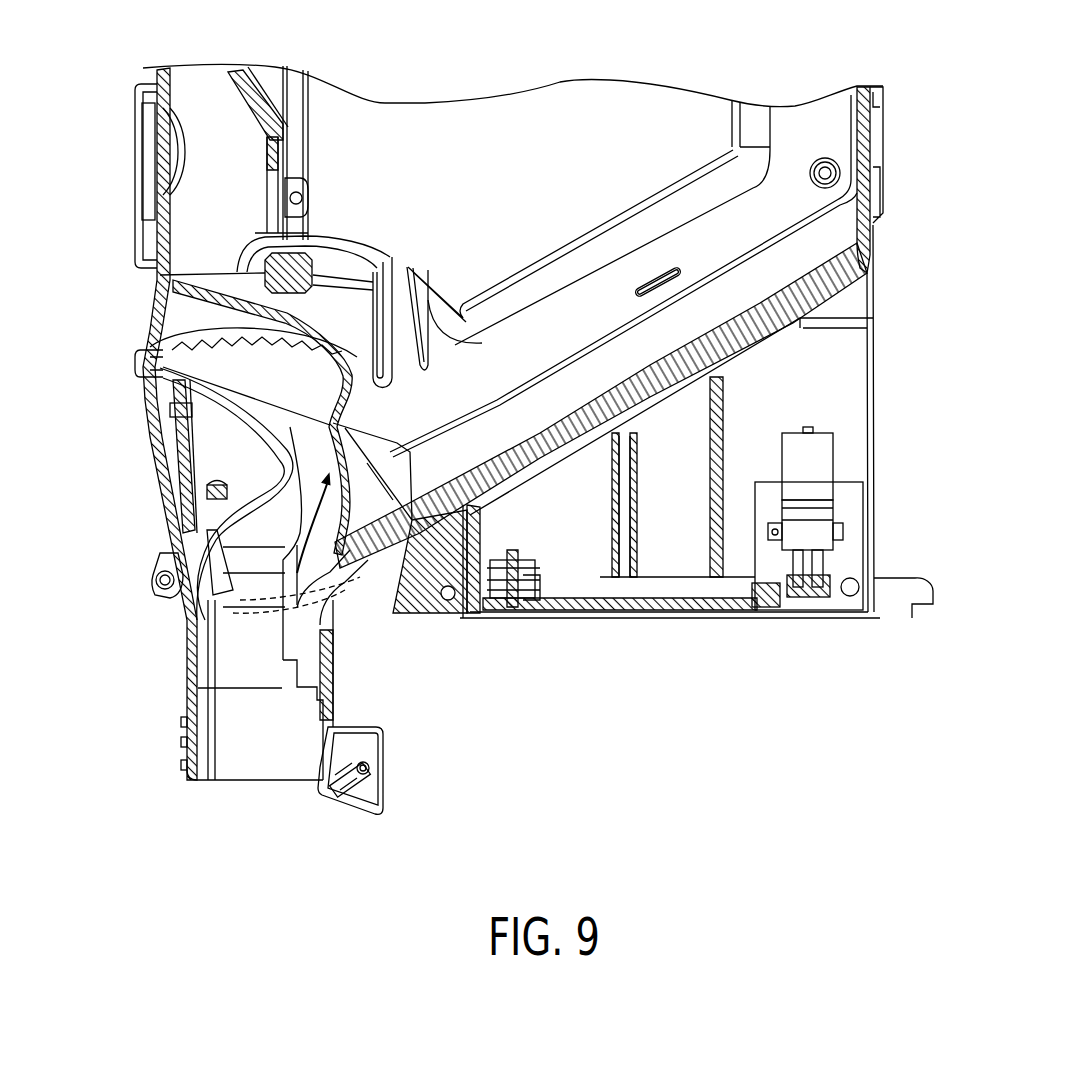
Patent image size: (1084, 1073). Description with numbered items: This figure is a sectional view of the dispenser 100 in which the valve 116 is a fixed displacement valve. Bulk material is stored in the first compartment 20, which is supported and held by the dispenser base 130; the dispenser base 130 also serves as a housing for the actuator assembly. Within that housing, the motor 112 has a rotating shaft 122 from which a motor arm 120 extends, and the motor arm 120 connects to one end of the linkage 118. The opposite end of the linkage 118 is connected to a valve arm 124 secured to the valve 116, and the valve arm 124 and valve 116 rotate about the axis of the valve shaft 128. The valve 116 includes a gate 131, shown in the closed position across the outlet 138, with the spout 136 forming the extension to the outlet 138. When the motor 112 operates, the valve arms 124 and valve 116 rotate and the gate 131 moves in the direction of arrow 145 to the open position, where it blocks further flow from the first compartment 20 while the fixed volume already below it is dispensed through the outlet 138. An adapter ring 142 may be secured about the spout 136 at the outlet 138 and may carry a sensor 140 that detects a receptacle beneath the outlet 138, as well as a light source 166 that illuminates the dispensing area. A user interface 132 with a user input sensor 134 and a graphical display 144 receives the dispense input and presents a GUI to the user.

The dispenser 100 is at (779, 46).
The first compartment 20 is at (578, 183).
The motor 112 is at (823, 450).
The valve 116 is at (292, 505).
The linkage 118 is at (512, 627).
The motor arm 120 is at (806, 615).
The rotating shaft 122 is at (812, 560).
The valve arm 124 is at (180, 552).
The valve shaft 128 is at (207, 492).
The dispenser base 130 is at (875, 432).
The gate 131 is at (362, 456).
The user interface 132 is at (134, 97).
The user input sensor 134 is at (133, 242).
The spout 136 is at (200, 670).
The outlet 138 is at (245, 792).
The sensor 140 is at (382, 787).
The adapter ring 142 is at (188, 745).
The graphical display 144 is at (143, 158).
The arrow 145 is at (295, 568).
The light source 166 is at (337, 763).